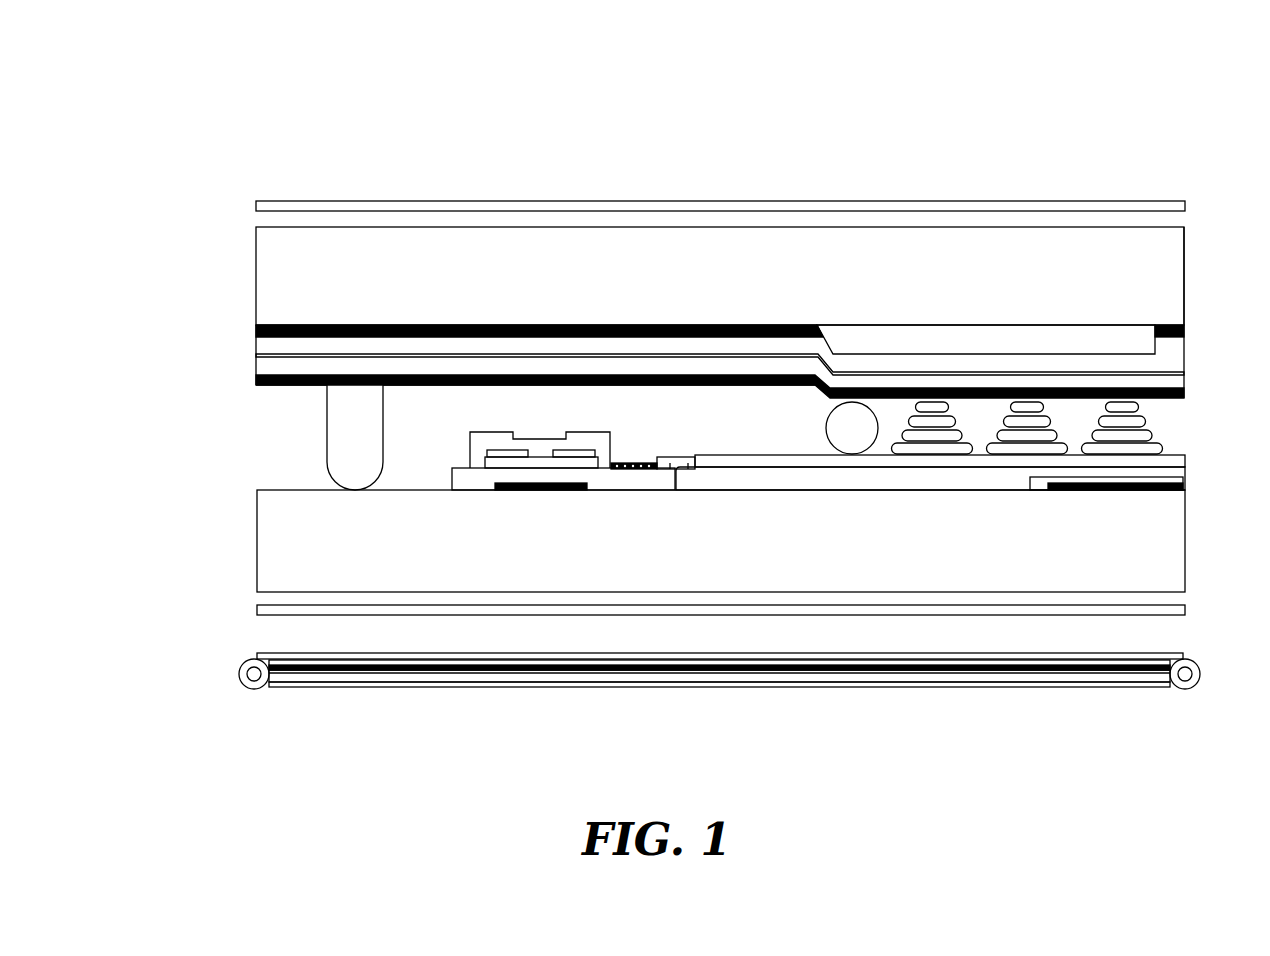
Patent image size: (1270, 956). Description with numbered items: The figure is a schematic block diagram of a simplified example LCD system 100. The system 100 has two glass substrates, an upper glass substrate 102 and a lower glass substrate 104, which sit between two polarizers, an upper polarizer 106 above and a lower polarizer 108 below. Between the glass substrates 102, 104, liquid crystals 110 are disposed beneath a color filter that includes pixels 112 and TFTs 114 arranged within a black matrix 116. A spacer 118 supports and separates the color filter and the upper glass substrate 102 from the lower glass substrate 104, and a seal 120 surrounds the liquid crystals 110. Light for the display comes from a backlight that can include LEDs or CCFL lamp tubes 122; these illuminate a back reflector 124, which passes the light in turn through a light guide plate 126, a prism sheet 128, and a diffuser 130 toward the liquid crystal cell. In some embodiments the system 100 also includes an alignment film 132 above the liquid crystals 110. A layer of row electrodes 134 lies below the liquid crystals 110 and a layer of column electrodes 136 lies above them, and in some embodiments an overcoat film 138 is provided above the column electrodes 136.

The LCD system 100 is at (444, 77).
The upper glass substrate 102 is at (256, 262).
The lower glass substrate 104 is at (256, 565).
The upper polarizer 106 is at (270, 201).
The lower polarizer 108 is at (256, 609).
The liquid crystals 110 is at (1150, 434).
The pixels 112 is at (950, 338).
The TFTs 114 is at (544, 437).
The black matrix 116 is at (256, 331).
The spacer 118 is at (828, 434).
The seal 120 is at (385, 412).
The LEDs or CCFL lamp tubes 122 is at (254, 690).
The back reflector 124 is at (730, 686).
The light guide plate 126 is at (600, 683).
The prism sheet 128 is at (523, 662).
The diffuser 130 is at (400, 655).
The alignment film 132 is at (278, 386).
The row electrodes 134 is at (790, 490).
The column electrodes 136 is at (256, 368).
The overcoat film 138 is at (256, 356).